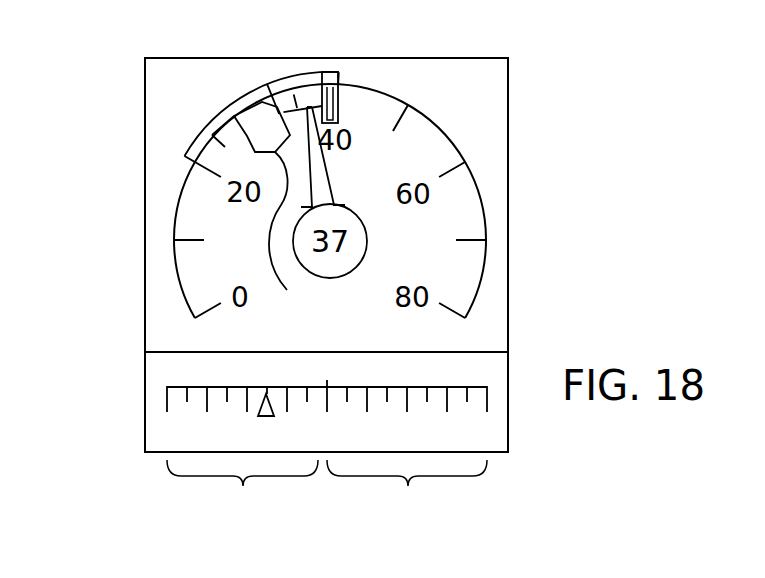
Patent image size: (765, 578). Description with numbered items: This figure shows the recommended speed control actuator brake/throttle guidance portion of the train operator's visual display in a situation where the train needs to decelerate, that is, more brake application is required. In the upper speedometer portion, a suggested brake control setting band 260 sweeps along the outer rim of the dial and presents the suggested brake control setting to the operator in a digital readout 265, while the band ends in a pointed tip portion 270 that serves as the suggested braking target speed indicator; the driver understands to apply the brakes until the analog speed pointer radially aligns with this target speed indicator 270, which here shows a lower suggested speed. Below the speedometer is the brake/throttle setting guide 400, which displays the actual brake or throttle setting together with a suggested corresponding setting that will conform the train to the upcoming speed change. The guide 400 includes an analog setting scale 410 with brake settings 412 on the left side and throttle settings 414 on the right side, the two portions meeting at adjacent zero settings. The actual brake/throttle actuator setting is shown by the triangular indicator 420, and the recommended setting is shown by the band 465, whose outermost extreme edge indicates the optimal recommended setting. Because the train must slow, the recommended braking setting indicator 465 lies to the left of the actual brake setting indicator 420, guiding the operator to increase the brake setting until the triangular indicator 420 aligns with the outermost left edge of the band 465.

The suggested brake control setting band 260 is at (185, 160).
The digital readout 265 is at (240, 108).
The pointed tip portion 270 is at (293, 237).
The brake/throttle setting guide 400 is at (104, 401).
The analog setting scale 410 is at (165, 397).
The brake settings 412 is at (242, 490).
The throttle settings 414 is at (407, 490).
The triangular indicator 420 is at (273, 410).
The band 465 is at (258, 391).